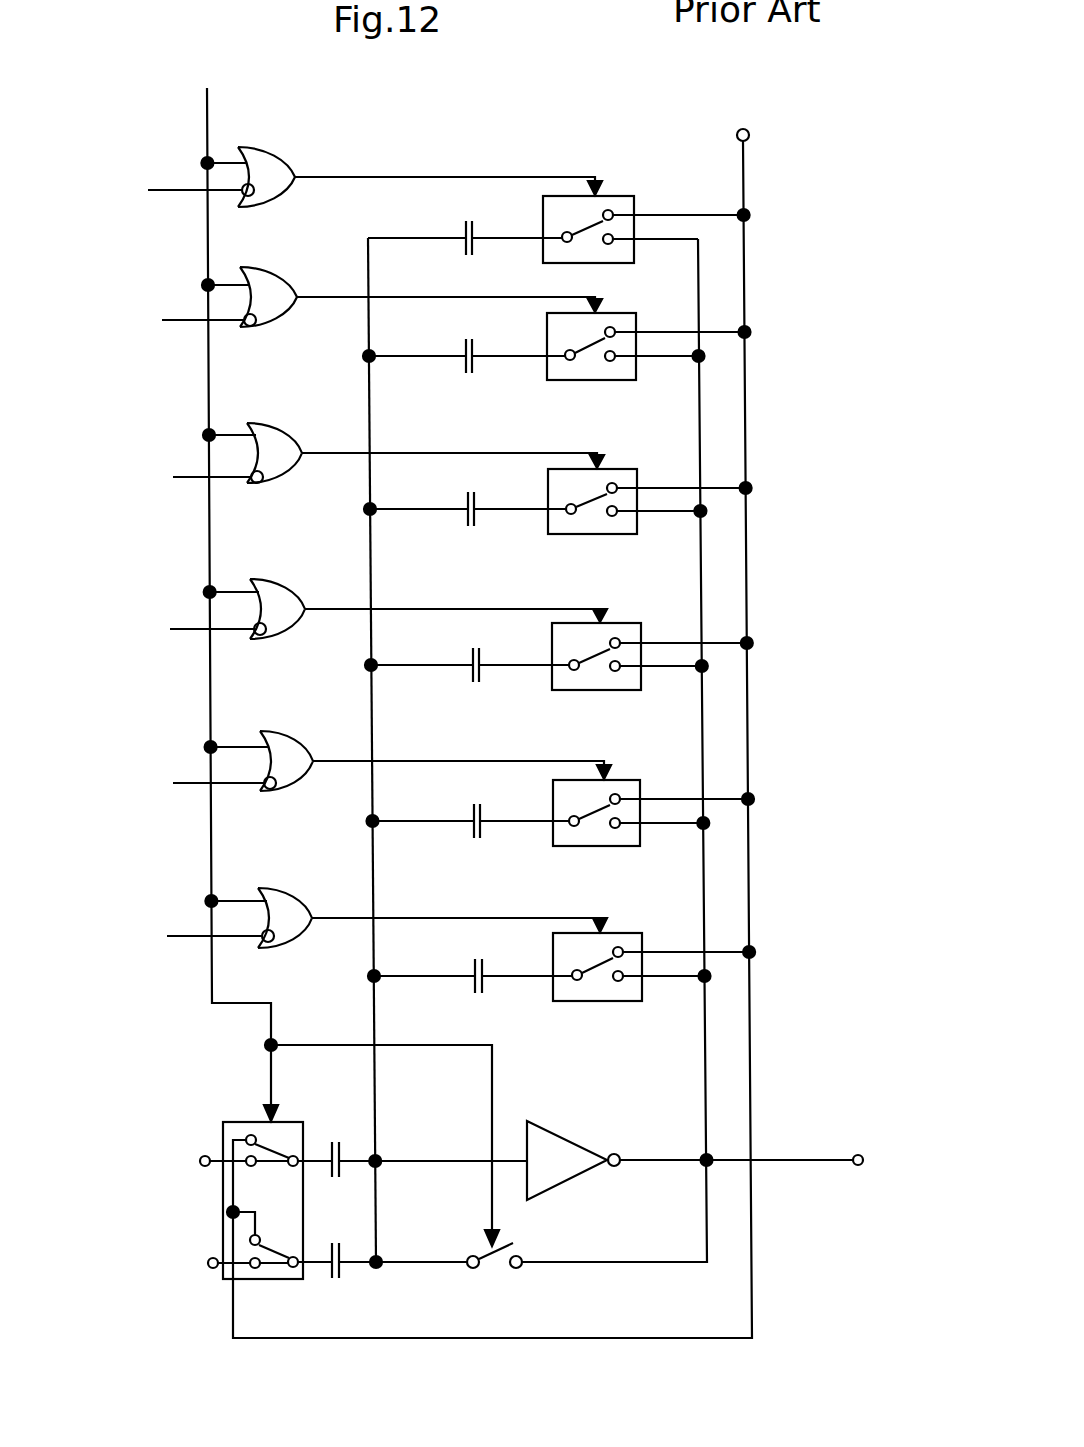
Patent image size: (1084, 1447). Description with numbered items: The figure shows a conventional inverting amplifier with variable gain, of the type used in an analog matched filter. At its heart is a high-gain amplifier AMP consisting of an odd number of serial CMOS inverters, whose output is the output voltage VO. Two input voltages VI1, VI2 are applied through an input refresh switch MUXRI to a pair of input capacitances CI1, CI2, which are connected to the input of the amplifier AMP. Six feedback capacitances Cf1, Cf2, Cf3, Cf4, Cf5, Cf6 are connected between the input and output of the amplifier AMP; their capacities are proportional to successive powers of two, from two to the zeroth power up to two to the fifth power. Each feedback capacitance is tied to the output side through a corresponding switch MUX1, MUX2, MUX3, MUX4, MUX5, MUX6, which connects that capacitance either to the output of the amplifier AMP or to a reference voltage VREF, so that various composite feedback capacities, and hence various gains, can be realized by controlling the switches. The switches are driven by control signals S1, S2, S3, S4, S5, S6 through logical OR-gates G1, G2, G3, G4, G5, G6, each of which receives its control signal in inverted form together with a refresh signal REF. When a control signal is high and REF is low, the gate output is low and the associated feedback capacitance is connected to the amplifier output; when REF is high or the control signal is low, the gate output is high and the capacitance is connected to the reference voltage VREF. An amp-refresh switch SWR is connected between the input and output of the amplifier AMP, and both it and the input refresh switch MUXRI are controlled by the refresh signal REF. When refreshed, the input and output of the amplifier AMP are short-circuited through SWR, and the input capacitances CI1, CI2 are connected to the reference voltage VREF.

The logical OR-gate G1 is at (287, 160).
The logical OR-gate G2 is at (308, 268).
The logical OR-gate G3 is at (297, 436).
The logical OR-gate G4 is at (298, 584).
The logical OR-gate G5 is at (306, 742).
The logical OR-gate G6 is at (304, 900).
The switch MUX1 is at (542, 207).
The switch MUX2 is at (546, 332).
The switch MUX3 is at (547, 485).
The switch MUX4 is at (551, 627).
The switch MUX5 is at (551, 797).
The switch MUX6 is at (553, 948).
The feedback capacitance Cf1 is at (463, 232).
The feedback capacitance Cf2 is at (465, 350).
The feedback capacitance Cf3 is at (465, 503).
The feedback capacitance Cf4 is at (472, 645).
The feedback capacitance Cf5 is at (474, 798).
The feedback capacitance Cf6 is at (475, 960).
The input capacitance CI1 is at (345, 1152).
The input capacitance CI2 is at (345, 1255).
The amplifier AMP is at (562, 1135).
The amp-refresh switch SWR is at (518, 1269).
The input refresh switch MUXRI is at (248, 1280).
The control signal S1 is at (181, 184).
The control signal S2 is at (182, 333).
The control signal S3 is at (185, 481).
The control signal S4 is at (187, 633).
The control signal S5 is at (192, 783).
The control signal S6 is at (192, 934).
The refresh signal REF is at (332, 652).
The reference voltage VREF is at (494, 715).
The input voltage VI1 is at (206, 1159).
The input voltage VI2 is at (206, 1271).
The output voltage VO is at (773, 1159).